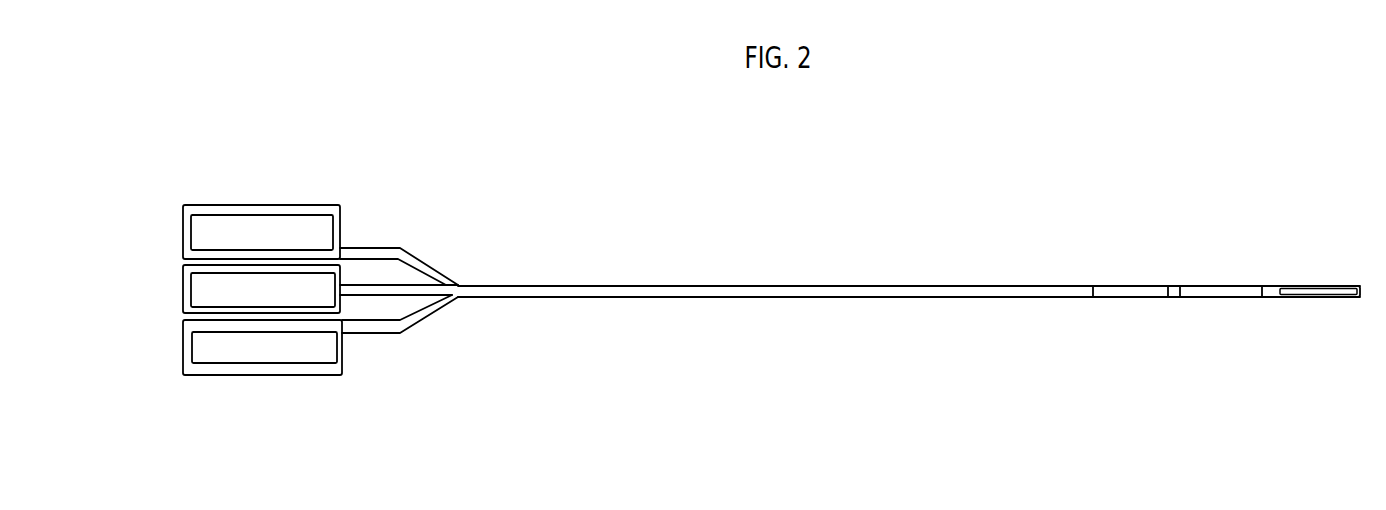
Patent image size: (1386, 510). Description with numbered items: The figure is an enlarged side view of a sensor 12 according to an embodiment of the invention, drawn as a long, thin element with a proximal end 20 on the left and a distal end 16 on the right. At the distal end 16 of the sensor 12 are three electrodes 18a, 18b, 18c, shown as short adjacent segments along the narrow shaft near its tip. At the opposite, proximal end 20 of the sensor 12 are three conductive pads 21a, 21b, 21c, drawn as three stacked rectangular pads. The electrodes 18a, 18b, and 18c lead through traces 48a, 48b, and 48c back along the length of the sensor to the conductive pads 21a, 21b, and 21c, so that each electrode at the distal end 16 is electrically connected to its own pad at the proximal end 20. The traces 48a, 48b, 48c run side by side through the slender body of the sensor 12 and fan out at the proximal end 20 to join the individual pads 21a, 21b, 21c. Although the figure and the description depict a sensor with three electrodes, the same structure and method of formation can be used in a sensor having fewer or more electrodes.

The sensor 12 is at (588, 205).
The proximal end 20 is at (352, 383).
The conductive pad 21a is at (182, 230).
The conductive pad 21b is at (182, 290).
The conductive pad 21c is at (183, 350).
The trace 48a is at (909, 264).
The trace 48b is at (909, 264).
The trace 48c is at (780, 286).
The distal end 16 is at (1225, 312).
The electrode 18a is at (1325, 284).
The electrode 18b is at (1220, 284).
The electrode 18c is at (1132, 284).